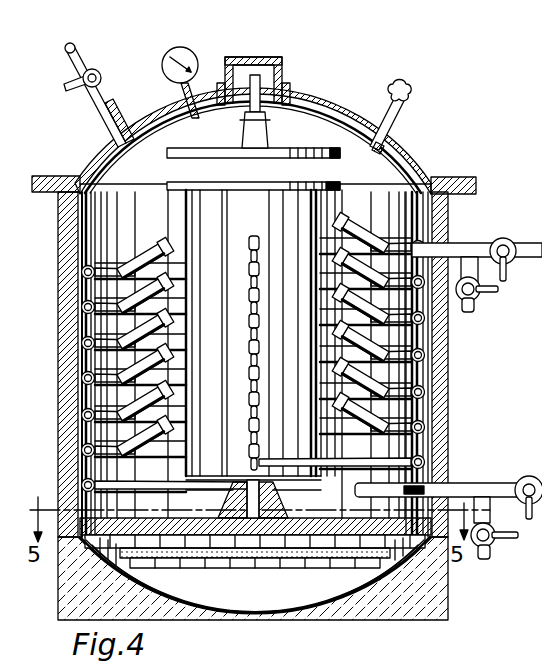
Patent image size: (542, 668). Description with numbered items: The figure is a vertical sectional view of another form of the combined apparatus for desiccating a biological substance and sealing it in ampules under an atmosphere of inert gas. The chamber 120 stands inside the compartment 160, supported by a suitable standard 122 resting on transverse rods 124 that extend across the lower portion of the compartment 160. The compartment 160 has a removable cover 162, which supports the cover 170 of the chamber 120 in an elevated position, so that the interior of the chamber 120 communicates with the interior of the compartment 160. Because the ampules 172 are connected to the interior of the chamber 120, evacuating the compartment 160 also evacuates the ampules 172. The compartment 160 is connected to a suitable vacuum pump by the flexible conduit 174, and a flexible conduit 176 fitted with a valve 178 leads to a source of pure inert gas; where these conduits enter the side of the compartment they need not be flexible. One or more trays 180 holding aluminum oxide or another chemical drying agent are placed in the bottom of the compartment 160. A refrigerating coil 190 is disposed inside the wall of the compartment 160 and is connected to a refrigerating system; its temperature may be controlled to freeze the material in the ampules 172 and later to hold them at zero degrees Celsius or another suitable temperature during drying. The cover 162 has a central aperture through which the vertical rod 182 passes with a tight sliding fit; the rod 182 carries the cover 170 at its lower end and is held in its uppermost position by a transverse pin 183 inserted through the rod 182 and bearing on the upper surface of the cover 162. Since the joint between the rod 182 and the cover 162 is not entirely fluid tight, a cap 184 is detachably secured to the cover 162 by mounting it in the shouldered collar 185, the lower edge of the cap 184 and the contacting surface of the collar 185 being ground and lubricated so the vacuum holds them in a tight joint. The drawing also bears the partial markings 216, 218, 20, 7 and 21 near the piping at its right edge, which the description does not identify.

The chamber 120 is at (266, 215).
The standard 122 is at (233, 500).
The transverse rods 124 is at (332, 500).
The compartment 160 is at (70, 325).
The cover 162 is at (418, 153).
The cover 170 is at (228, 152).
The ampules 172 is at (131, 262).
The flexible conduit 174 is at (418, 90).
The flexible conduit 176 is at (75, 62).
The valve 178 is at (80, 96).
The trays 180 is at (267, 572).
The vertical rod 182 is at (258, 80).
The transverse pin 183 is at (268, 114).
The cap 184 is at (281, 56).
The shouldered collar 185 is at (291, 92).
The refrigerating coil 190 is at (408, 200).
The lower pipe 216 is at (448, 540).
The valve 218 is at (525, 645).
The pipe 20 is at (533, 177).
The pipe 7 is at (531, 334).
The pipe 21 is at (528, 439).